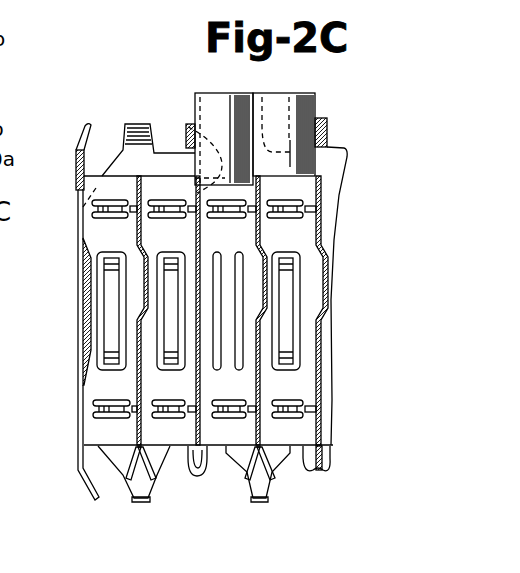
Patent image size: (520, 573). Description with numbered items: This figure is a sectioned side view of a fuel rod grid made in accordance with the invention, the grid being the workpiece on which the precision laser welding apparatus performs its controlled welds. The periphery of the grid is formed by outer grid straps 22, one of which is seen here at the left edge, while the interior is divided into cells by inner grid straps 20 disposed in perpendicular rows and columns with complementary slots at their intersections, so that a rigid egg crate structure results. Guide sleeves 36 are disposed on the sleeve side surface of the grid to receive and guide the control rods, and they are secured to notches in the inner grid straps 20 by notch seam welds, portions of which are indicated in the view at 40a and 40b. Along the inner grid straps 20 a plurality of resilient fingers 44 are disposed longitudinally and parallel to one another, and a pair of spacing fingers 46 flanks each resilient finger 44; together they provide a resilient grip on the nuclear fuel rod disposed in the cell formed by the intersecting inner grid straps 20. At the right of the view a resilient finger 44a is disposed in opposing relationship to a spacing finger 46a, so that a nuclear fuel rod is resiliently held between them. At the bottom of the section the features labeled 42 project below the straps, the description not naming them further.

The inner grid strap 20 is at (320, 190).
The outer grid strap 22 is at (76, 162).
The guide sleeve 36 is at (229, 92).
The housing shoulder portion 40a is at (139, 165).
The hidden contour of member 40b is at (192, 130).
The terminal tails 42 is at (250, 477).
The resilient finger 44 is at (331, 304).
The resilient finger 44a is at (263, 378).
The spacing finger 46 is at (110, 416).
The spacing finger 46a is at (308, 210).